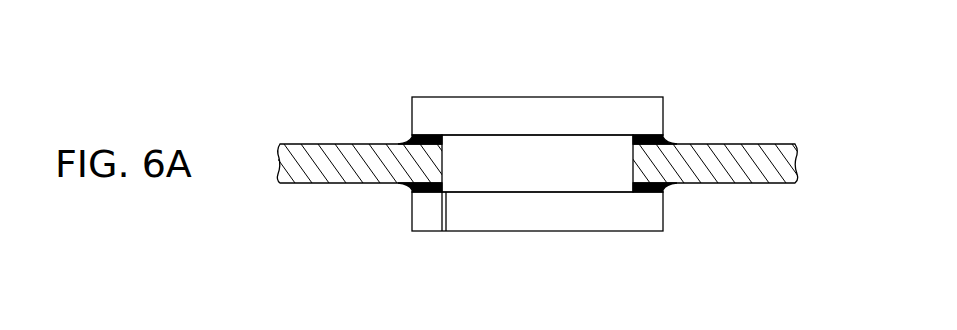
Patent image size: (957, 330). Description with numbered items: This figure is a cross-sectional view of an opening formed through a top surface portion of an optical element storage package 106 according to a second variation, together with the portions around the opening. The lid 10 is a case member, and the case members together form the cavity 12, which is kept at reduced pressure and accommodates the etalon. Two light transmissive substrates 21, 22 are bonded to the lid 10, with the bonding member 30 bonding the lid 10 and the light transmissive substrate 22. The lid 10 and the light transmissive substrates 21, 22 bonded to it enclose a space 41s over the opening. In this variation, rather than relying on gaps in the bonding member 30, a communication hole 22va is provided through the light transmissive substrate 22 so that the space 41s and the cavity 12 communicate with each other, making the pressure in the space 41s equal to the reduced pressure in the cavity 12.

The optical element storage package 106 is at (818, 19).
The lid 10 is at (360, 160).
The cavity 12 is at (350, 246).
The light transmissive substrate 21 is at (478, 113).
The light transmissive substrate 22 is at (575, 212).
The communication hole 22va is at (445, 232).
The bonding member 30 is at (665, 137).
The space 41s is at (550, 158).